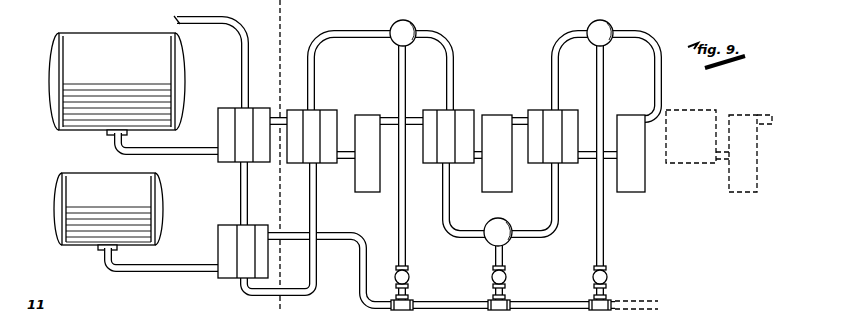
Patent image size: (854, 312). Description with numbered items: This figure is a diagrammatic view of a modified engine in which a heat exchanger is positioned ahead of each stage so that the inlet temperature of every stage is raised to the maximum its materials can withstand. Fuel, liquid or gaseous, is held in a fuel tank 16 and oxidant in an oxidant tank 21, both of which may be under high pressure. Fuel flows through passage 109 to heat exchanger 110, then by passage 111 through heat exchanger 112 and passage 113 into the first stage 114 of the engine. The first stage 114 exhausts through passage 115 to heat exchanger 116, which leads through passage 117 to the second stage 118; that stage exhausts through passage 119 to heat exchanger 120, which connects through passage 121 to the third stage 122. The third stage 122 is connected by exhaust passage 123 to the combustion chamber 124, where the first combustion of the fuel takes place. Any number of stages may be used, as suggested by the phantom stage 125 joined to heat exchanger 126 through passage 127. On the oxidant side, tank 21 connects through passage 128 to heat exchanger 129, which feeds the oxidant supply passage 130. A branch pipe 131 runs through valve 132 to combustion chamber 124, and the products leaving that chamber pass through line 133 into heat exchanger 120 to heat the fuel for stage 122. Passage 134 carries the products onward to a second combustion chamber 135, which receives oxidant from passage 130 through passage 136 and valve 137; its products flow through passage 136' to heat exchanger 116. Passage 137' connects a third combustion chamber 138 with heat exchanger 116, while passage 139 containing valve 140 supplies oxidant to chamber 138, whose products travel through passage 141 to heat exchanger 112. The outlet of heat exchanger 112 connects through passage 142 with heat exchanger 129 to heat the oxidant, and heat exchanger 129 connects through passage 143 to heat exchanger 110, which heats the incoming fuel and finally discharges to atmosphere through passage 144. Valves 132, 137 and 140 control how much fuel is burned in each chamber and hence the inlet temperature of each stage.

The fuel tank 16 is at (130, 40).
The oxidant tank 21 is at (86, 247).
The passage 109 is at (194, 157).
The heat exchanger 110 is at (228, 107).
The passage 111 is at (285, 115).
The heat exchanger 112 is at (329, 109).
The passage 113 is at (346, 163).
The first stage 114 is at (360, 193).
The passage 115 is at (414, 117).
The heat exchanger 116 is at (463, 109).
The passage 117 is at (477, 163).
The second stage 118 is at (512, 192).
The passage 119 is at (517, 117).
The heat exchanger 120 is at (567, 109).
The passage 121 is at (590, 162).
The third stage 122 is at (626, 113).
The exhaust passage 123 is at (663, 82).
The combustion chamber 124 is at (610, 27).
The stage 125 is at (747, 199).
The heat exchanger 126 is at (712, 109).
The passage 127 is at (718, 160).
The passage 128 is at (153, 273).
The heat exchanger 129 is at (218, 231).
The oxidant supply passage 130 is at (292, 232).
The branch pipe 131 is at (603, 252).
The valve 132 is at (607, 280).
The line 133 is at (554, 40).
The passage 134 is at (538, 231).
The second combustion chamber 135 is at (489, 250).
The passage 136 is at (518, 272).
The passage 136' is at (468, 197).
The valve 137 is at (513, 288).
The passage 137' is at (450, 73).
The third combustion chamber 138 is at (392, 27).
The passage 139 is at (399, 58).
The valve 140 is at (409, 280).
The passage 141 is at (330, 31).
The passage 142 is at (317, 262).
The passage 143 is at (249, 200).
The passage 144 is at (204, 26).